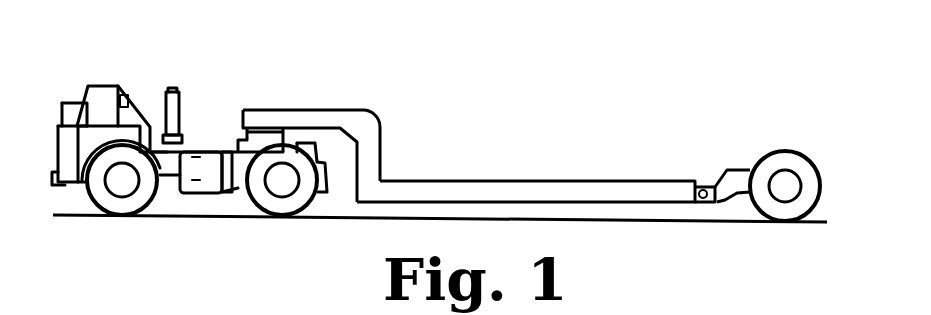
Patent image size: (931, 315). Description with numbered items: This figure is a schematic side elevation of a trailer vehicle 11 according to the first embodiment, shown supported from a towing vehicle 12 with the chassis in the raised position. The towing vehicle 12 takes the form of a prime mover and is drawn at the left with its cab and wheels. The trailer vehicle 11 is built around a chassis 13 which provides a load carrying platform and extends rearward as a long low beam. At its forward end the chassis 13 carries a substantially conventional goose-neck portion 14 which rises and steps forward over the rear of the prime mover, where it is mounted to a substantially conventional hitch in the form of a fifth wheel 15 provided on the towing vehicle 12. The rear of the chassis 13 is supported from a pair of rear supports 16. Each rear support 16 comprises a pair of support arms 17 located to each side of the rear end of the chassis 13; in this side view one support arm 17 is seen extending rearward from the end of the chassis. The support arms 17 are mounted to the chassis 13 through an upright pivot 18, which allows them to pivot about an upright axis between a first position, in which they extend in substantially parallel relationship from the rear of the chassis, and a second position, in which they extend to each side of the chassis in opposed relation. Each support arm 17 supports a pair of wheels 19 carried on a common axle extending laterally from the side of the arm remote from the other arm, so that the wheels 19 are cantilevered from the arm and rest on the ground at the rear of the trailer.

The trailer vehicle 11 is at (538, 163).
The towing vehicle 12 is at (124, 90).
The chassis 13 is at (516, 186).
The goose-neck portion 14 is at (302, 110).
The fifth wheel 15 is at (240, 124).
The rear support 16 is at (764, 176).
The support arm 17 is at (725, 170).
The upright pivot 18 is at (703, 205).
The wheel 19 is at (810, 158).